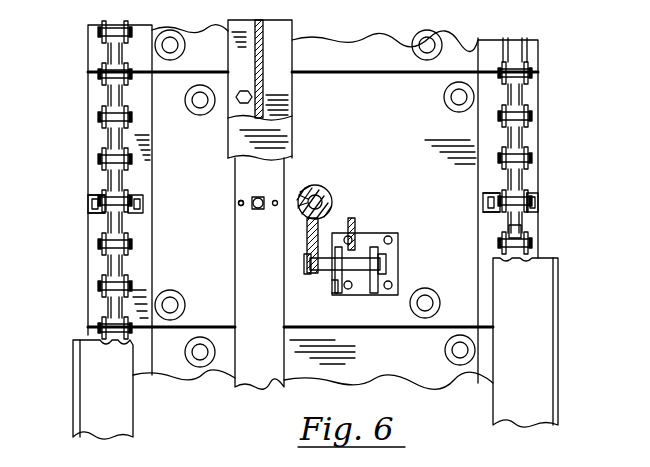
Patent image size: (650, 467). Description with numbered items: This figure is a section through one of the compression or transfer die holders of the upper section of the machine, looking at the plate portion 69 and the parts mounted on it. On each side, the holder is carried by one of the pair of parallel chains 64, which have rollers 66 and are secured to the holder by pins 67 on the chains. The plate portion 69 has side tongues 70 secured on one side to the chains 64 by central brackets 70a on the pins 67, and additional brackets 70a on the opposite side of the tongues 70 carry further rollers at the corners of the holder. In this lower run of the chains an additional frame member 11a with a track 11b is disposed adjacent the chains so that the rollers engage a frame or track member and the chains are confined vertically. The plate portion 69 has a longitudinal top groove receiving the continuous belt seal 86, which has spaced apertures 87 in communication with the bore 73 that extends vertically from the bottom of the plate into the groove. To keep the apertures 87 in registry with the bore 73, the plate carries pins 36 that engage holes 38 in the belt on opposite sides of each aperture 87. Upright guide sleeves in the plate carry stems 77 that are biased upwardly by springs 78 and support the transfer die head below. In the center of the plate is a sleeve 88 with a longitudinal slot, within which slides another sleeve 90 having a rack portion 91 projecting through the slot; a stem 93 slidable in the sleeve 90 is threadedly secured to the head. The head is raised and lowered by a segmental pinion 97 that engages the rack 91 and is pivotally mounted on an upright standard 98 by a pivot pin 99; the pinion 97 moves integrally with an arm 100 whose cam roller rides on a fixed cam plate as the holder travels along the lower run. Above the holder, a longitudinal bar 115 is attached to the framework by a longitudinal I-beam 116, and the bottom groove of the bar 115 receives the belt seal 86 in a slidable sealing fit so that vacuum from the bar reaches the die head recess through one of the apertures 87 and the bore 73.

The plate portion 69 is at (353, 80).
The longitudinal I-beam 116 is at (292, 97).
The spring 78 is at (196, 113).
The longitudinal bar 115 is at (232, 146).
The chains 64 is at (100, 140).
The central brackets 70a is at (92, 197).
The rollers 66 is at (88, 208).
The side tongues 70 is at (95, 272).
The stems 77 is at (175, 305).
The additional frame member 11a is at (82, 368).
The bore 73 is at (240, 200).
The holes 38 is at (240, 205).
The pins 36 is at (241, 203).
The apertures 87 is at (262, 212).
The belt seal 86 is at (265, 386).
The stem 93 is at (307, 190).
The sleeve 90 is at (318, 188).
The sleeve 88 is at (327, 192).
The rack portion 91 is at (320, 228).
The arm 100 is at (356, 226).
The pivot pin 99 is at (385, 265).
The segmental pinion 97 is at (312, 278).
The upright standard 98 is at (337, 292).
The pins 67 is at (540, 200).
The track 11b is at (520, 232).